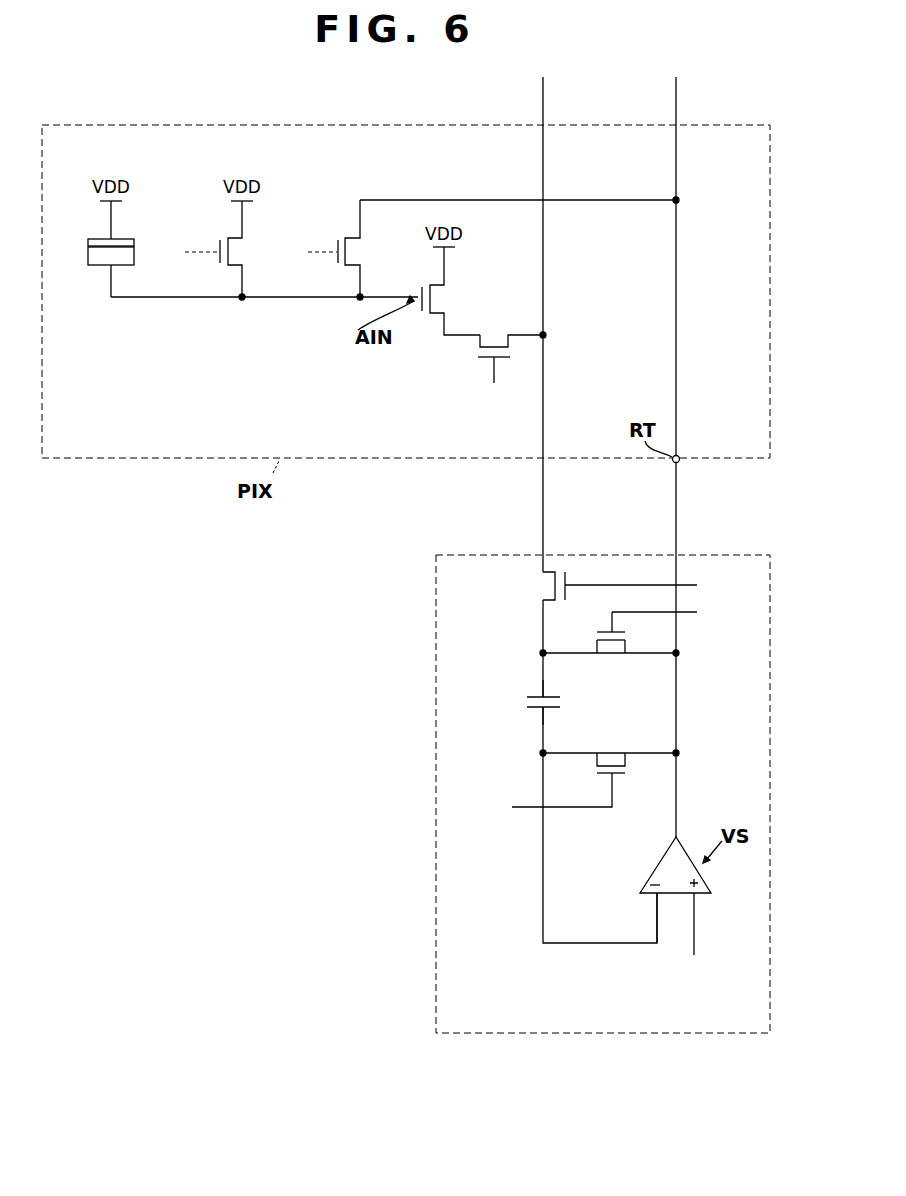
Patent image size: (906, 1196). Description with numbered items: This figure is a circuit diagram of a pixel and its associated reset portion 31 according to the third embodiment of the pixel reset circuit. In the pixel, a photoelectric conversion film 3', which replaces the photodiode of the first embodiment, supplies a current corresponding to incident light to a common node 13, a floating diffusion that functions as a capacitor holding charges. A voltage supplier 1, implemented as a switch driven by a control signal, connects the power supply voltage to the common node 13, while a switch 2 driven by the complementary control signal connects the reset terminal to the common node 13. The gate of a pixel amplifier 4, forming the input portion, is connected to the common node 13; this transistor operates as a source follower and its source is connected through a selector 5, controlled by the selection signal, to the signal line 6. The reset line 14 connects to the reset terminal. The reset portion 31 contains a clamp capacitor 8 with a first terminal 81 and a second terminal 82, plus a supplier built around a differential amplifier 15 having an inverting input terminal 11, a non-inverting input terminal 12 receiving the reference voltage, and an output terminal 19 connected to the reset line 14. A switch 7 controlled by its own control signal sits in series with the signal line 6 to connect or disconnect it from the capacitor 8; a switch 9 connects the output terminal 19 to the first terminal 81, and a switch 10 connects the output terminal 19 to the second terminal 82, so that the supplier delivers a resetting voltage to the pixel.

The voltage supplier 1 is at (218, 264).
The switch 2 is at (350, 232).
The photoelectric conversion film 3' is at (90, 261).
The pixel amplifier 4 is at (428, 283).
The selector 5 is at (494, 335).
The signal line 6 is at (543, 509).
The switch 7 is at (543, 586).
The capacitor 8 is at (525, 705).
The first terminal 81 is at (534, 691).
The second terminal 82 is at (534, 713).
The switch 9 is at (612, 655).
The switch 10 is at (612, 753).
The inverting input terminal 11 is at (650, 903).
The non-inverting input terminal 12 is at (700, 903).
The common node 13 is at (272, 300).
The reset line 14 is at (678, 509).
The differential amplifier 15 is at (660, 864).
The output terminal 19 is at (673, 834).
The reset portion 31 is at (436, 801).